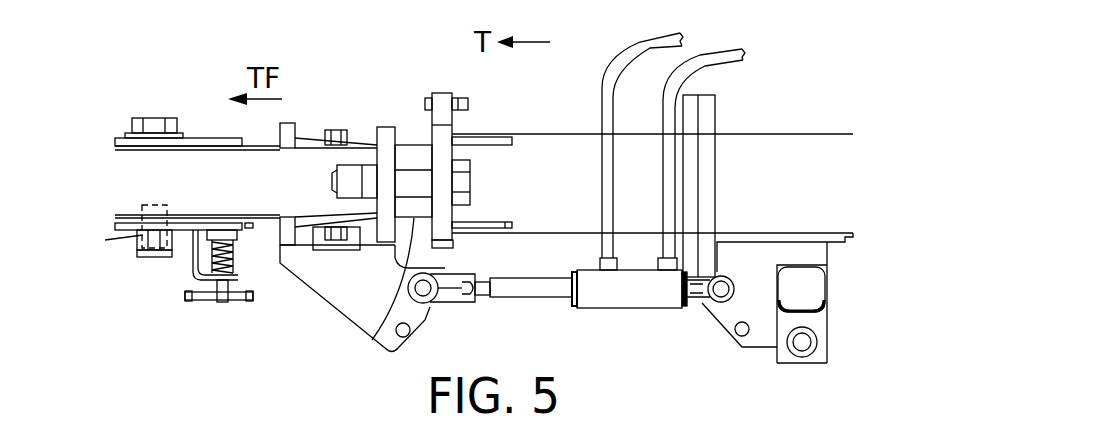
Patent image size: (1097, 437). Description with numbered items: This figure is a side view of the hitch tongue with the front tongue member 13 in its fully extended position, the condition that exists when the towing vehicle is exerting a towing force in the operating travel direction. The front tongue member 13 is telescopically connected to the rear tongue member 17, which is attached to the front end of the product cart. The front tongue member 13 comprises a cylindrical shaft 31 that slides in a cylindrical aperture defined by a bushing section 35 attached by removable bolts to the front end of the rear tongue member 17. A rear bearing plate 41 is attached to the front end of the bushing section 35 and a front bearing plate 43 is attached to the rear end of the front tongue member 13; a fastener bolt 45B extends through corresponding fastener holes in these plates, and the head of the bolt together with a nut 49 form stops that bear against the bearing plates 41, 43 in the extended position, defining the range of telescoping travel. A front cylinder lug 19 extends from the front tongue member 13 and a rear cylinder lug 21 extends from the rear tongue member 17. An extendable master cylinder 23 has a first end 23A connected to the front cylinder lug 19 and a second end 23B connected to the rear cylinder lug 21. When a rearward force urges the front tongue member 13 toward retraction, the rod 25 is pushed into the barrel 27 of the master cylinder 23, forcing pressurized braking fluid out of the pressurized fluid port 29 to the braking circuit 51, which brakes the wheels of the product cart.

The front tongue member 13 is at (185, 232).
The rear tongue member 17 is at (805, 134).
The front cylinder lug 19 is at (328, 310).
The rear cylinder lug 21 is at (715, 325).
The master cylinder 23 is at (593, 308).
The first end of master cylinder 23A is at (430, 306).
The second end of master cylinder 23B is at (728, 277).
The rod 25 is at (507, 278).
The barrel 27 is at (640, 308).
The pressurized fluid port 29 is at (650, 265).
The cylindrical shaft 31 is at (375, 337).
The bushing section 35 is at (527, 133).
The rear bearing plate 41 is at (440, 93).
The front bearing plate 43 is at (385, 127).
The bolt 45B is at (417, 173).
The nut 49 is at (355, 163).
The braking circuit 51 is at (717, 63).